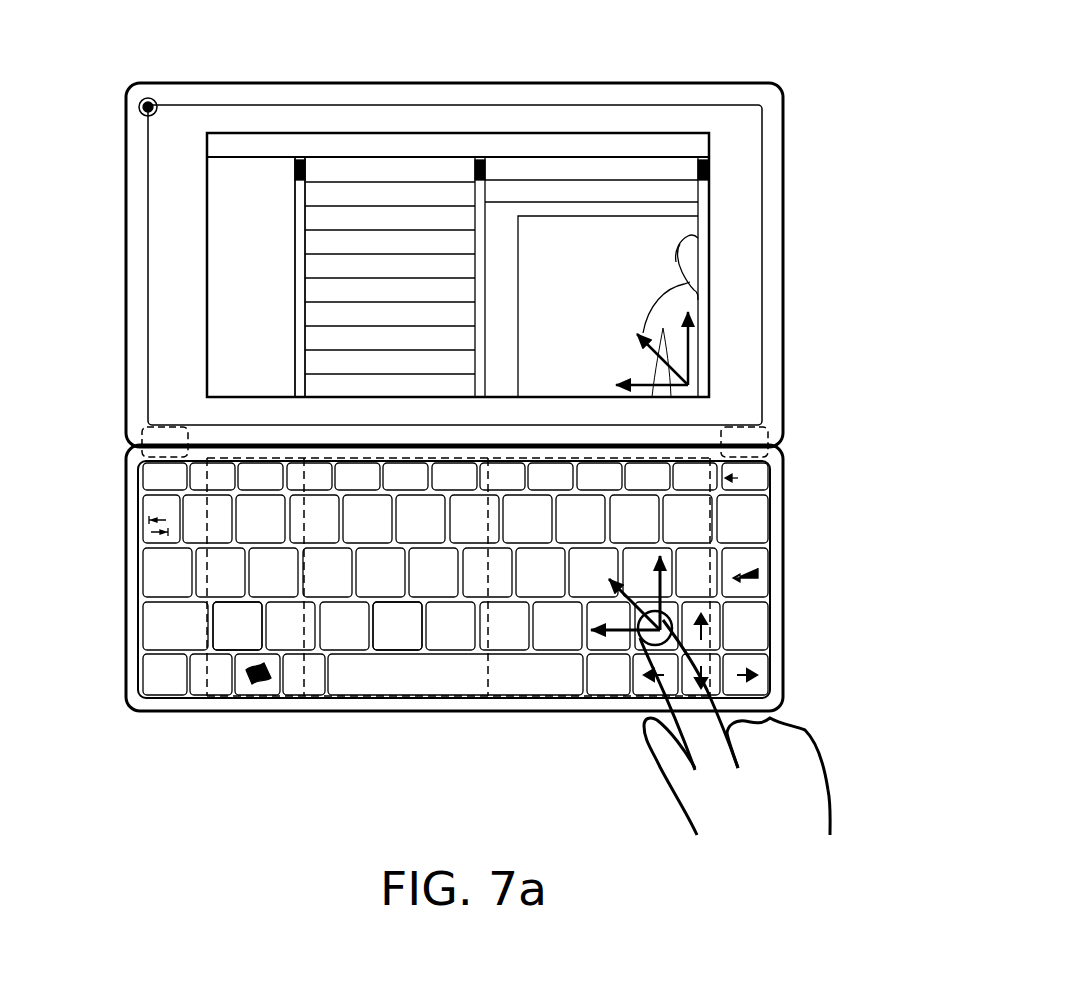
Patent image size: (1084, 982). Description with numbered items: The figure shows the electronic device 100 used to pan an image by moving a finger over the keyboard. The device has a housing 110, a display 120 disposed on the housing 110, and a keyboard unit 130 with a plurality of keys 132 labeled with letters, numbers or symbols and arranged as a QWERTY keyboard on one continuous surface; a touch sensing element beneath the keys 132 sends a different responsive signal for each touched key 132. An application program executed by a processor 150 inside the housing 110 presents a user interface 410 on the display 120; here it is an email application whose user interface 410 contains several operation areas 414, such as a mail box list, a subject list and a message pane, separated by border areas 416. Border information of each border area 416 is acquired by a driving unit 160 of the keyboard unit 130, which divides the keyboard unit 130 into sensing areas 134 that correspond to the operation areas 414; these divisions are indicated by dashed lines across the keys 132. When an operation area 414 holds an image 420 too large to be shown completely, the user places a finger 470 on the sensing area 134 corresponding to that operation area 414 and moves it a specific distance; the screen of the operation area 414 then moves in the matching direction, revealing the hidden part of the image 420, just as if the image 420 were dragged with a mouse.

The electronic device 100 is at (100, 111).
The housing 110 is at (127, 397).
The display 120 is at (147, 195).
The keyboard unit 130 is at (137, 556).
The keys 132 is at (757, 667).
The sensing areas 134 is at (243, 630).
The processor 150 is at (140, 437).
The driving unit 160 is at (783, 420).
The user interface 410 is at (211, 128).
The operation areas 414 is at (425, 190).
The border area 416 is at (300, 252).
The image 420 is at (693, 275).
The finger 470 is at (647, 645).